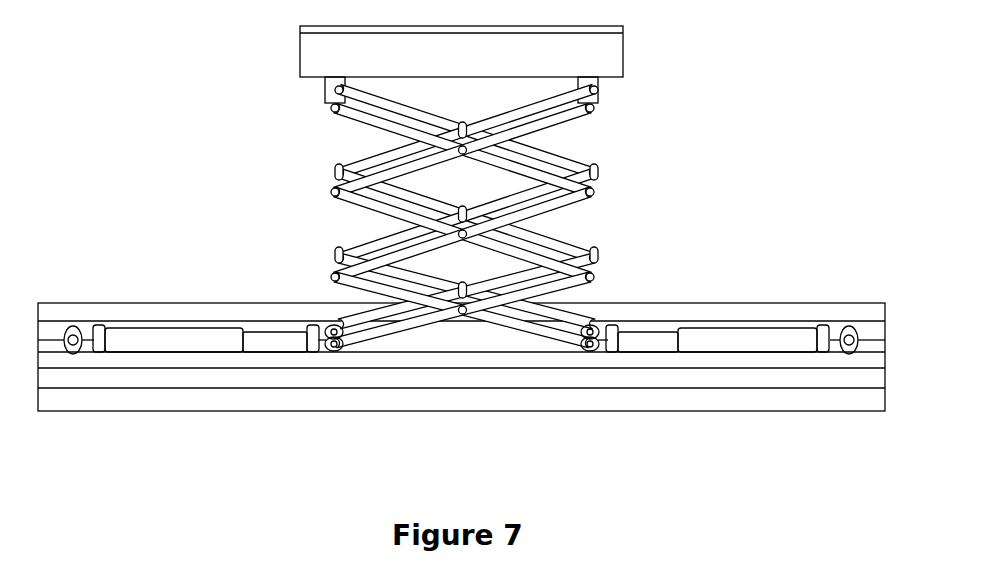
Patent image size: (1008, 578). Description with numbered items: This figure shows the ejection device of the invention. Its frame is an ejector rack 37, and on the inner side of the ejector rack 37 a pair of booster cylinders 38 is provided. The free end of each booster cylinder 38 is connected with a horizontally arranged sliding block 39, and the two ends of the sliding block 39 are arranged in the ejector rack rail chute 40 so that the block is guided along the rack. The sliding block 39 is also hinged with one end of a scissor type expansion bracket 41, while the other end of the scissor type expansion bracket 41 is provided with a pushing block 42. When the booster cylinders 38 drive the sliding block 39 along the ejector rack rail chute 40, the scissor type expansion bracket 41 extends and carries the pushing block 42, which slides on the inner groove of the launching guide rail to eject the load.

The ejector rack 37 is at (248, 397).
The booster cylinder 38 is at (152, 343).
The sliding block 39 is at (323, 333).
The ejector rack rail chute 40 is at (645, 322).
The scissor type expansion bracket 41 is at (582, 146).
The pushing block 42 is at (322, 58).